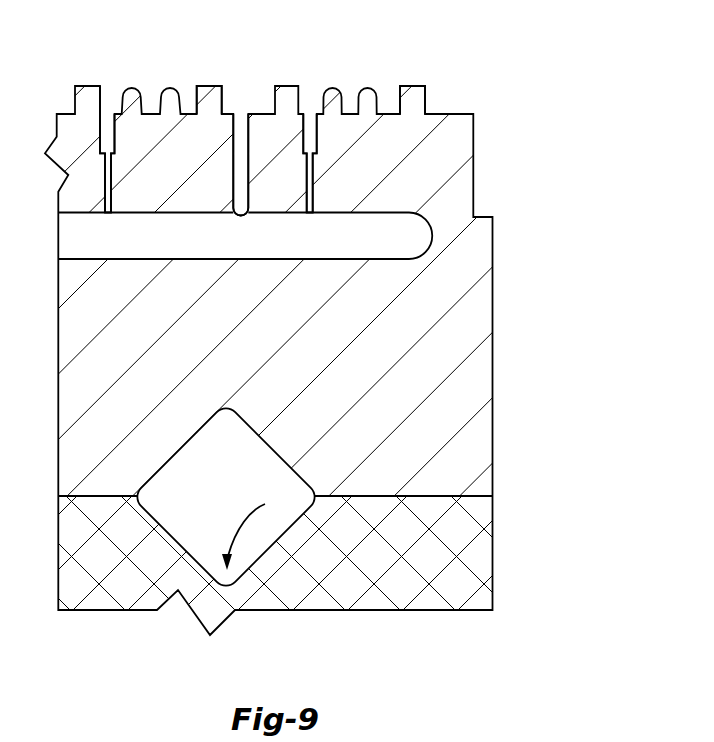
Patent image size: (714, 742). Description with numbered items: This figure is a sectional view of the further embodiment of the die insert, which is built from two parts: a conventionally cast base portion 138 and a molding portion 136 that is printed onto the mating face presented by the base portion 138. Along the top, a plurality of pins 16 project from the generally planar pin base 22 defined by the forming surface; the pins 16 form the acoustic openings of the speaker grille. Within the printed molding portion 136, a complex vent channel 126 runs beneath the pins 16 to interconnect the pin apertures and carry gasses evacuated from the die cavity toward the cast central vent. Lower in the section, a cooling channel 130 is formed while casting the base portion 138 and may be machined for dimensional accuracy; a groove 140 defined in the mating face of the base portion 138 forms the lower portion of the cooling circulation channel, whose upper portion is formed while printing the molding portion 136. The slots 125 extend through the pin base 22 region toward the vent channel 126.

The pins 16 is at (210, 86).
The pin base 22 is at (455, 113).
The slot 125 is at (107, 145).
The vent channel 126 is at (227, 246).
The cooling channel 130 is at (235, 507).
The molding portion 136 is at (493, 311).
The base portion 138 is at (493, 511).
The groove 140 is at (255, 526).